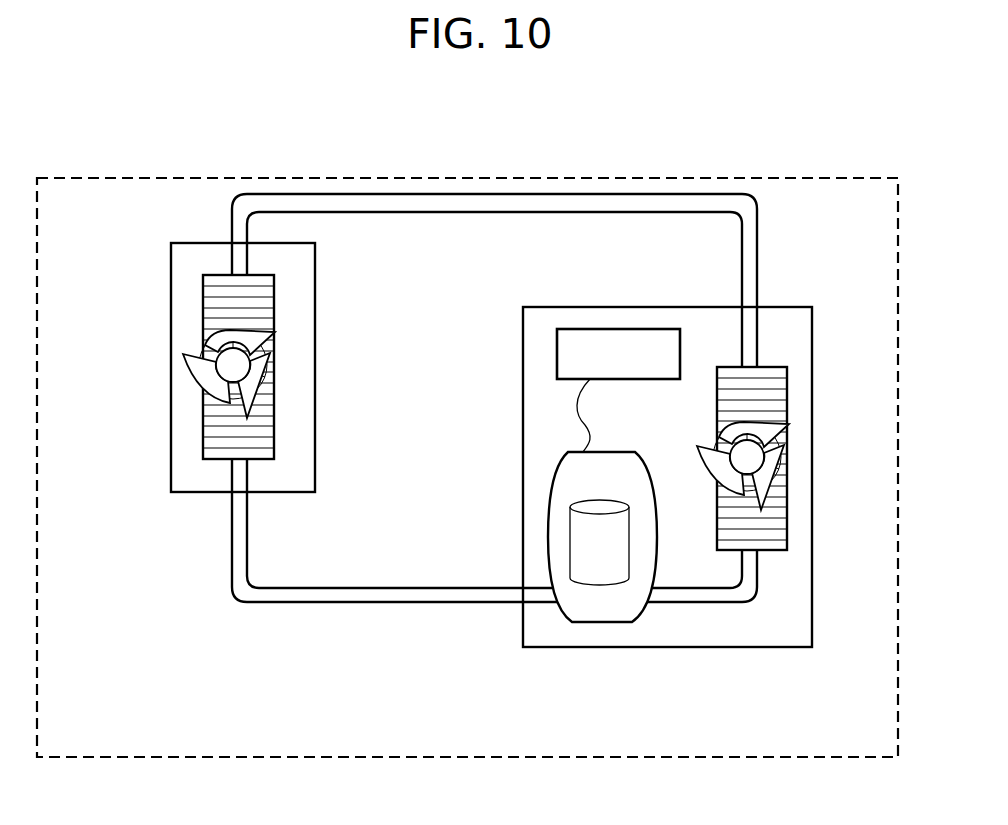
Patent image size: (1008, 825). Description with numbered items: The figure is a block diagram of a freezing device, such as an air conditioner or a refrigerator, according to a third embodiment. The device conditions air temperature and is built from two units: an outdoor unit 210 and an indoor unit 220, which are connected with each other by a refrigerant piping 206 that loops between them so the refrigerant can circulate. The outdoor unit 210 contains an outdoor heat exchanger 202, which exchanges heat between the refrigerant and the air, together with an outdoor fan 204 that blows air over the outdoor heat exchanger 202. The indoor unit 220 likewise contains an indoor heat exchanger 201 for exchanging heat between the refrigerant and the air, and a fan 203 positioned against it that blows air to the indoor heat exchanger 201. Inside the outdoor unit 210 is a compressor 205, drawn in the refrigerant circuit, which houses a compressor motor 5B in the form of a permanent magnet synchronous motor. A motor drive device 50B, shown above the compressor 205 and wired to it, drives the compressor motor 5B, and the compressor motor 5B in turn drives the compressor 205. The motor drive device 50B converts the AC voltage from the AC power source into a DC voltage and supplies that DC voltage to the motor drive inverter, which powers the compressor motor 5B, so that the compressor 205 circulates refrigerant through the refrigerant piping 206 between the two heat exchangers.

The outdoor heat exchanger 202 is at (638, 178).
The indoor unit 220 is at (315, 260).
The outdoor unit 210 is at (780, 308).
The refrigerant piping 206 is at (350, 602).
The indoor heat exchanger 201 is at (204, 298).
The fan 203 is at (200, 369).
The outdoor fan 204 is at (770, 462).
The motor drive device 50B is at (557, 350).
The compressor 205 is at (591, 622).
The compressor motor 5B is at (570, 518).